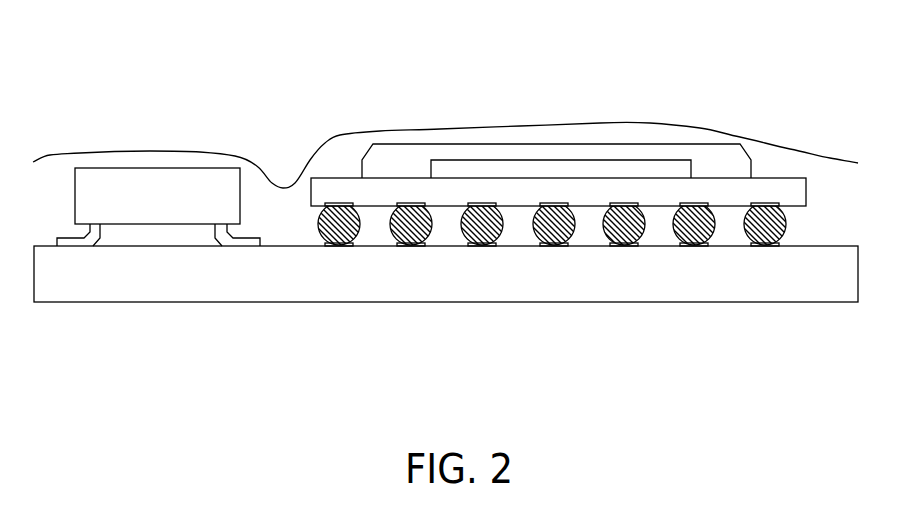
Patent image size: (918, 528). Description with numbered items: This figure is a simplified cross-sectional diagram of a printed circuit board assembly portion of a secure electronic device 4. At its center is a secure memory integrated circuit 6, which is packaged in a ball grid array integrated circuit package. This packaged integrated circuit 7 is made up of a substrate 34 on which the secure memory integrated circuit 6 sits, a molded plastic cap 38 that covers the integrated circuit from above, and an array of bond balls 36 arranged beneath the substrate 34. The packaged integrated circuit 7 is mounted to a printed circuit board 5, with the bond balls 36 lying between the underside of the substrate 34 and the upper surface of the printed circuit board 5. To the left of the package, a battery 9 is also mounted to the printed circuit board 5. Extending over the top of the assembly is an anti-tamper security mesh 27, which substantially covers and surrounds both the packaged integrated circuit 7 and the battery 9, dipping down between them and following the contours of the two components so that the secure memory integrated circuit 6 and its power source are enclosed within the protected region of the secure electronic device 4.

The secure electronic device 4 is at (402, 108).
The printed circuit board 5 is at (446, 274).
The secure memory integrated circuit 6 is at (507, 169).
The packaged integrated circuit 7 is at (680, 138).
The battery 9 is at (158, 207).
The anti-tamper security mesh 27 is at (180, 152).
The substrate 34 is at (315, 190).
The bond balls 36 is at (689, 207).
The molded plastic cap 38 is at (391, 168).